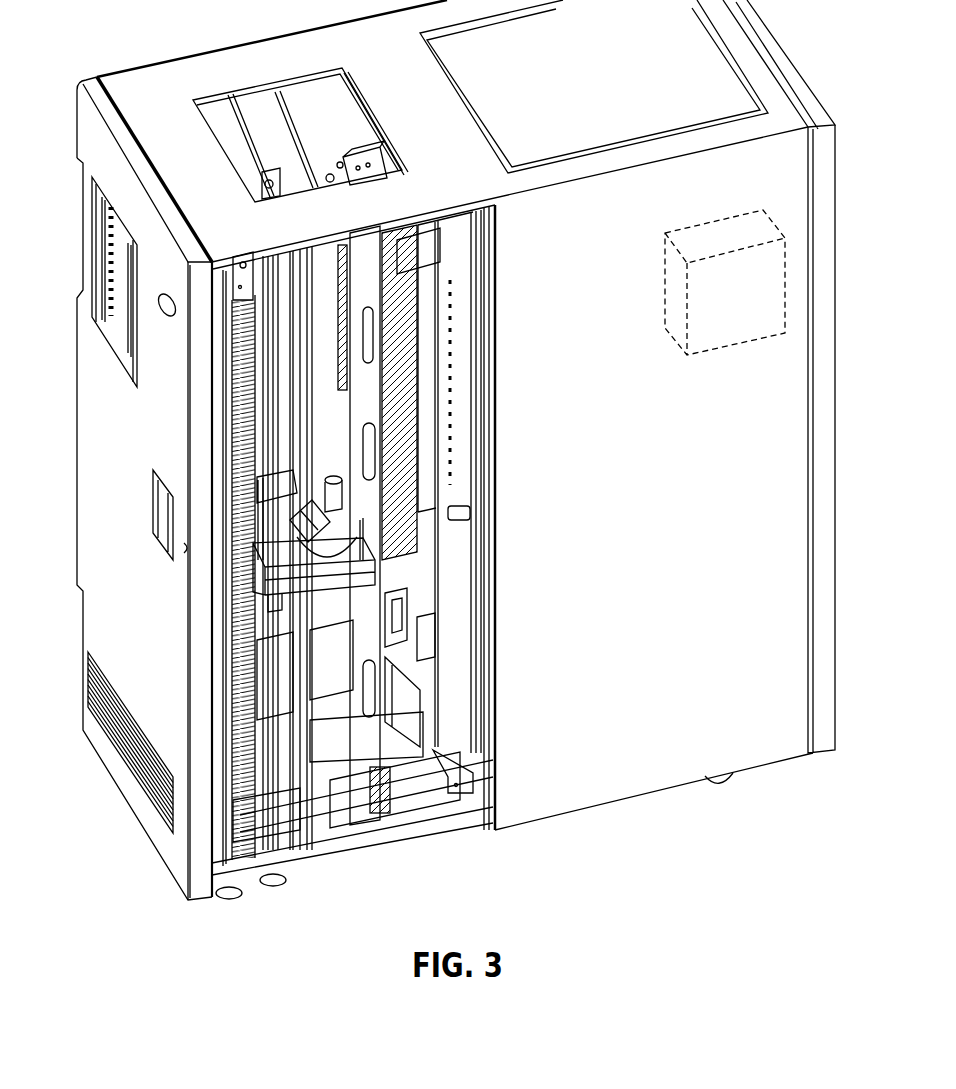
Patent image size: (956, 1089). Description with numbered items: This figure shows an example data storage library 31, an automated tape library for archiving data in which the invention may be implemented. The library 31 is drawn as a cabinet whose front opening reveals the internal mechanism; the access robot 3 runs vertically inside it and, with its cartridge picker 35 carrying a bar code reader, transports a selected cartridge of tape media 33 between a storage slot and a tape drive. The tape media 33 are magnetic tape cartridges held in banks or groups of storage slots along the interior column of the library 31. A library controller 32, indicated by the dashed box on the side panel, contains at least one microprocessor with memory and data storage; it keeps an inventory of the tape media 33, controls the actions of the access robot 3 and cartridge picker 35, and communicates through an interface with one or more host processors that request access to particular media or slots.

The data storage library 31 is at (255, 57).
The library controller 32 is at (663, 290).
The tape media 33 is at (420, 390).
The cartridge picker 35 is at (383, 574).
The access robot 3 is at (233, 373).